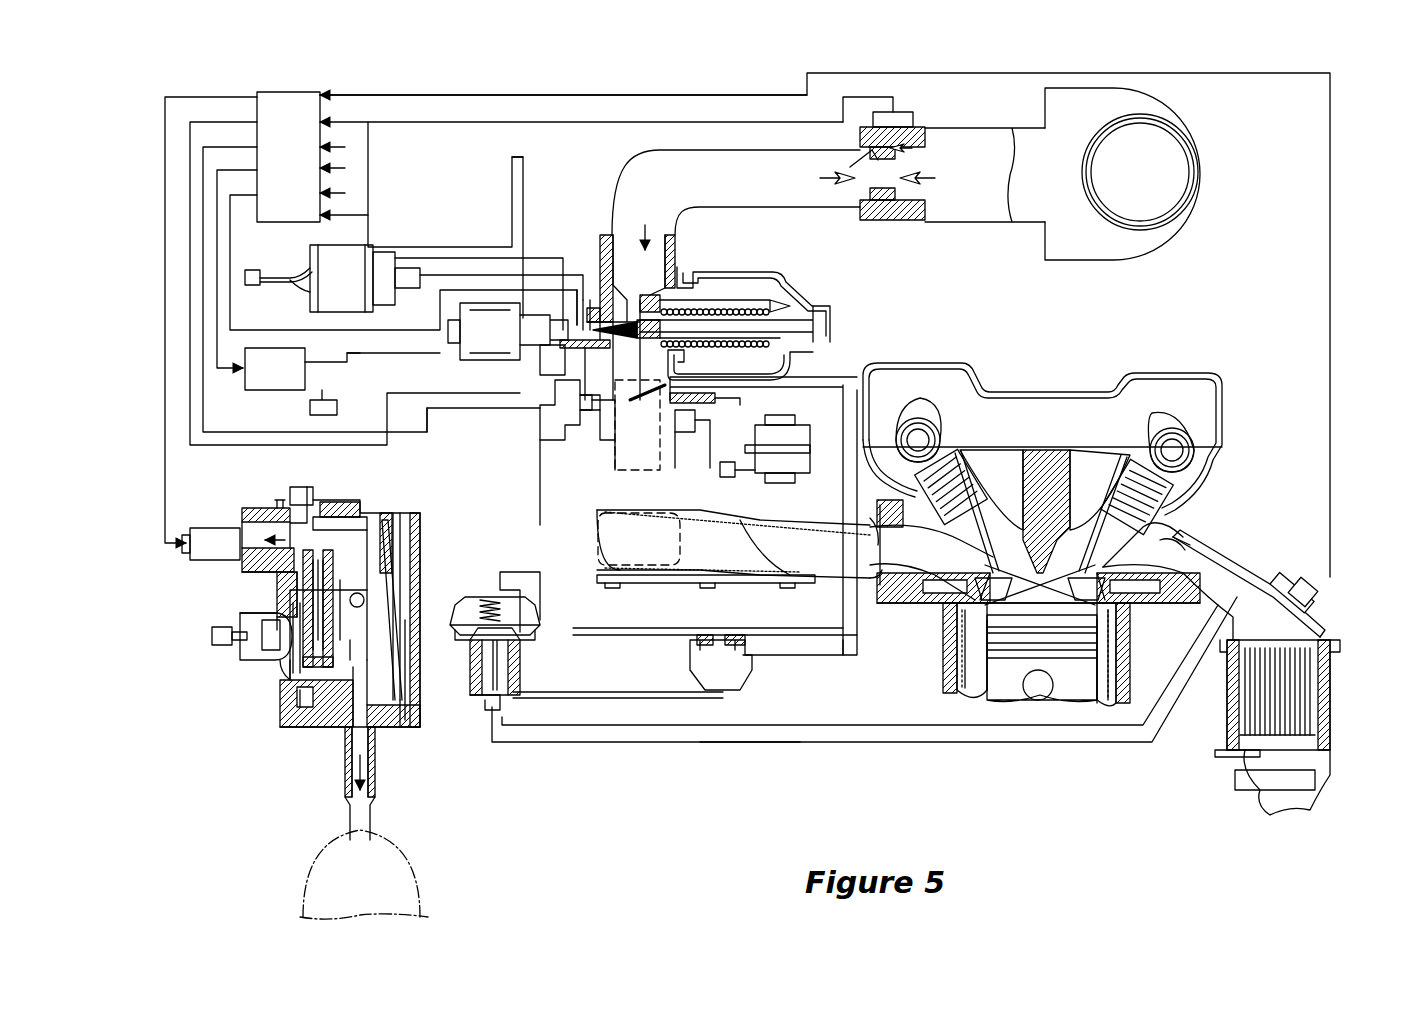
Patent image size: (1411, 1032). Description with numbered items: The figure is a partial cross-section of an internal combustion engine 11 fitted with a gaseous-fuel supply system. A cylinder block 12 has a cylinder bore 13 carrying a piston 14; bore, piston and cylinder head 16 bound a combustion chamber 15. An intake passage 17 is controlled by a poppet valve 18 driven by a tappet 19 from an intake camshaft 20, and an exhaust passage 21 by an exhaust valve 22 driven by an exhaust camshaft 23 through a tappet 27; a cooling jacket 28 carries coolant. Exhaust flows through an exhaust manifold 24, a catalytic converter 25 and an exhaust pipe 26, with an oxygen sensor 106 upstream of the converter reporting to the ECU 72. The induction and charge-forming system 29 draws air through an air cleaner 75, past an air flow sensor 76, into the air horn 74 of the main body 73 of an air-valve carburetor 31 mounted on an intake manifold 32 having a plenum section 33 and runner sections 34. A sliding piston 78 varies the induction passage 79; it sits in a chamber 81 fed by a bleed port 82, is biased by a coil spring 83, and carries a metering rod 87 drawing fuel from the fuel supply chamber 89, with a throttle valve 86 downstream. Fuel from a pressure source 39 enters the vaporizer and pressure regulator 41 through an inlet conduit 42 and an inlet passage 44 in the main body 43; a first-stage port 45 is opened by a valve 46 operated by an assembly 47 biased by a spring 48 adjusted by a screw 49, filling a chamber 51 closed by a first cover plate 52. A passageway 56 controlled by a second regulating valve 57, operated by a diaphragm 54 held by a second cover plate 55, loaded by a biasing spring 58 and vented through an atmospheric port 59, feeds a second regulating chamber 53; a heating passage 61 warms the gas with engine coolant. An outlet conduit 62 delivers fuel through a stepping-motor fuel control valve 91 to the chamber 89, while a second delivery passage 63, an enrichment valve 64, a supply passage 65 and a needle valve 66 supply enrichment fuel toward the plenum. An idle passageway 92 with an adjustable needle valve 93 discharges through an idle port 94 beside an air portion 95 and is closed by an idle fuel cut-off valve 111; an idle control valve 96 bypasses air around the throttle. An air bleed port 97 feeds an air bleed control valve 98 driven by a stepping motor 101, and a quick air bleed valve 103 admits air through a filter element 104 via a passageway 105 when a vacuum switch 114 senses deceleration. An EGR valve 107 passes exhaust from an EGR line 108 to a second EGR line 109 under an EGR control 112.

The internal combustion engine 11 is at (1131, 563).
The cylinder block 12 is at (1130, 635).
The cylinder bore 13 is at (985, 697).
The piston 14 is at (1045, 700).
The combustion chamber 15 is at (1018, 618).
The cylinder head 16 is at (893, 615).
The intake passage 17 is at (870, 503).
The intake poppet valve 18 is at (920, 548).
The tappet 19 is at (960, 472).
The intake camshaft 20 is at (922, 412).
The exhaust passage 21 is at (1160, 575).
The exhaust valve 22 is at (1175, 540).
The exhaust camshaft 23 is at (1172, 418).
The exhaust manifold 24 is at (1270, 580).
The catalytic converter 25 is at (1333, 690).
The exhaust pipe 26 is at (1315, 805).
The exhaust tappet 27 is at (1135, 455).
The cooling jacket 28 is at (940, 640).
The induction and charge-forming system 29 is at (756, 298).
The carburetor 31 is at (788, 268).
The intake manifold 32 is at (712, 522).
The plenum section 33 is at (640, 583).
The runner section 34 is at (836, 645).
The pressure source 39 is at (380, 830).
The vaporizer and pressure regulator 41 is at (304, 685).
The inlet conduit 42 is at (345, 760).
The main body portion 43 is at (315, 727).
The inlet passage 44 is at (410, 700).
The first pressure stage regulating port 45 is at (290, 590).
The first stage valve 46 is at (240, 520).
The valve operating assembly 47 is at (280, 690).
The spring 48 is at (262, 650).
The adjusting screw 49 is at (215, 645).
The first regulating chamber 51 is at (330, 508).
The first cover plate 52 is at (295, 727).
The second regulating chamber 53 is at (393, 545).
The diaphragm 54 is at (403, 570).
The second cover plate 55 is at (392, 648).
The passageway 56 is at (350, 505).
The second pressure regulating valve 57 is at (395, 525).
The biasing spring 58 is at (408, 595).
The atmospheric port 59 is at (415, 727).
The internal heating passage 61 is at (420, 685).
The outlet conduit 62 is at (445, 380).
The second delivery passage 63 is at (245, 585).
The enrichment valve 64 is at (200, 556).
The supply passage 65 is at (300, 495).
The needle valve 66 is at (275, 497).
The ECU 72 is at (315, 92).
The carburetor main body portion 73 is at (600, 235).
The air horn 74 is at (655, 262).
The air cleaner 75 is at (1175, 118).
The air flow sensor 76 is at (910, 112).
The sliding piston 78 is at (760, 305).
The induction passage 79 is at (635, 300).
The piston chamber 81 is at (793, 360).
The bleed port 82 is at (700, 280).
The coil compression spring 83 is at (813, 292).
The throttle valve 86 is at (635, 515).
The metering rod 87 is at (583, 300).
The fuel supply chamber 89 is at (517, 157).
The fuel control valve 91 is at (495, 303).
The idle passageway 92 is at (690, 430).
The adjustable needle valve 93 is at (730, 420).
The idle port 94 is at (640, 410).
The idle air portion 95 is at (553, 445).
The idle control valve 96 is at (530, 525).
The air bleed port 97 is at (640, 160).
The air bleed control valve 98 is at (345, 245).
The stepping motor 101 is at (390, 256).
The quick air bleed valve 103 is at (577, 290).
The filter element 104 is at (310, 408).
The bleed passageway 105 is at (355, 354).
The oxygen sensor 106 is at (1320, 598).
The EGR valve 107 is at (470, 710).
The EGR line 108 is at (745, 745).
The second EGR line 109 is at (573, 650).
The idle fuel cut-off valve 111 is at (540, 375).
The EGR control 112 is at (745, 680).
The vacuum switch 114 is at (805, 432).